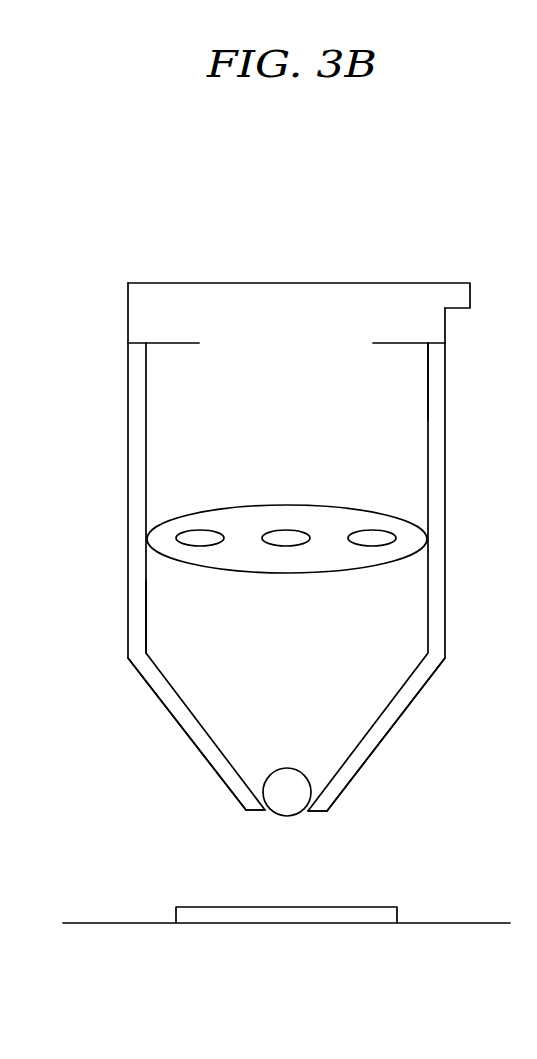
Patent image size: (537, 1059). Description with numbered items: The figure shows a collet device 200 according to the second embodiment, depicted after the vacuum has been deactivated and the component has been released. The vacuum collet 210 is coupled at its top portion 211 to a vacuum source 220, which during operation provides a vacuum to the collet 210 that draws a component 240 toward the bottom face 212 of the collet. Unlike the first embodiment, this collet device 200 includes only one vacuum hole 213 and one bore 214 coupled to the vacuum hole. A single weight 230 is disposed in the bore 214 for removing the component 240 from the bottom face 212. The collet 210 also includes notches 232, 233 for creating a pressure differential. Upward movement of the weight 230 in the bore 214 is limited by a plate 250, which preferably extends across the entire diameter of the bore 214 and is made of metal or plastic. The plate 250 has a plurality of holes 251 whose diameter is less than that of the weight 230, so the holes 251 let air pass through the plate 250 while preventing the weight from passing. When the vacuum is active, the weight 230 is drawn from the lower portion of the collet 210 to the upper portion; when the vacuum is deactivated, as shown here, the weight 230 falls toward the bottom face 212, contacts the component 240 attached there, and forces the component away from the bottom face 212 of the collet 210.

The collet device 200 is at (450, 184).
The vacuum collet 210 is at (435, 633).
The top portion 211 is at (400, 360).
The bottom face 212 is at (255, 823).
The vacuum hole 213 is at (302, 830).
The bore 214 is at (398, 594).
The vacuum source 220 is at (147, 312).
The weight 230 is at (279, 779).
The notch 232 is at (222, 801).
The notch 233 is at (354, 800).
The component 240 is at (386, 915).
The plate 250 is at (378, 521).
The holes 251 is at (372, 538).